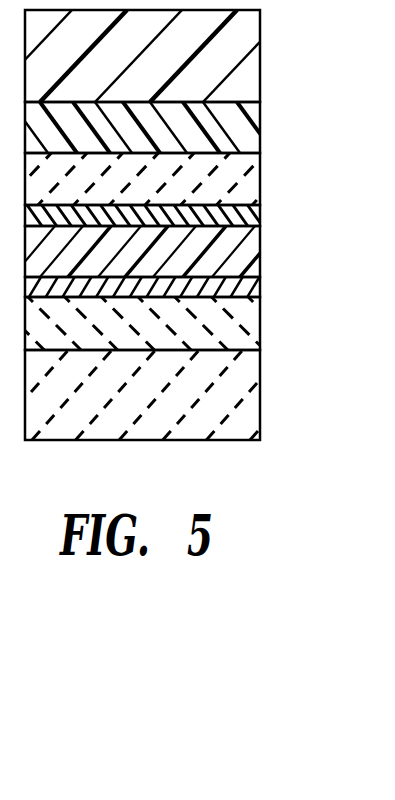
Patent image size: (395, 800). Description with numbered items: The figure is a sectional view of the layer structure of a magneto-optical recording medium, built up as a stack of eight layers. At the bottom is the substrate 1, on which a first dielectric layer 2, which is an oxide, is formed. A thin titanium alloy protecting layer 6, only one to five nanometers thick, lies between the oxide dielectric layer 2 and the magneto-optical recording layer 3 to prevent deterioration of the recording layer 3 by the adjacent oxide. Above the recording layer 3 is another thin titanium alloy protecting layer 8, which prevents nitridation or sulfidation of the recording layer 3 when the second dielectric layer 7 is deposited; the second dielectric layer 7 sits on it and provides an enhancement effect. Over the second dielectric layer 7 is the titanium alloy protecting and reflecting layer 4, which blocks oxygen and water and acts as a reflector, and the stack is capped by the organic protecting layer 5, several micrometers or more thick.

The substrate 1 is at (252, 393).
The dielectric layer 2 is at (252, 328).
The magneto-optical recording layer 3 is at (247, 252).
The titanium alloy protecting and reflecting layer 4 is at (248, 128).
The organic protecting layer 5 is at (233, 52).
The thin titanium alloy protecting layer 6 is at (248, 285).
The second dielectric layer 7 is at (250, 186).
The thin titanium alloy protecting layer 8 is at (258, 208).